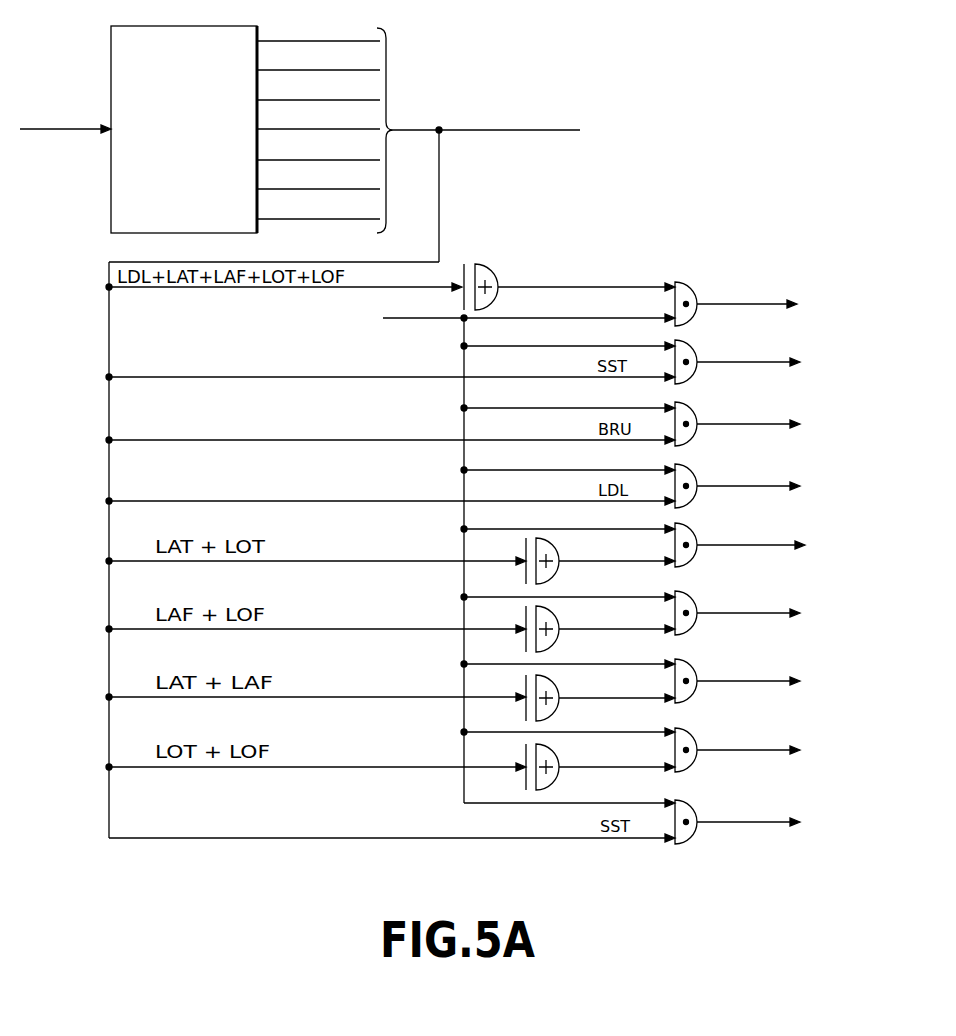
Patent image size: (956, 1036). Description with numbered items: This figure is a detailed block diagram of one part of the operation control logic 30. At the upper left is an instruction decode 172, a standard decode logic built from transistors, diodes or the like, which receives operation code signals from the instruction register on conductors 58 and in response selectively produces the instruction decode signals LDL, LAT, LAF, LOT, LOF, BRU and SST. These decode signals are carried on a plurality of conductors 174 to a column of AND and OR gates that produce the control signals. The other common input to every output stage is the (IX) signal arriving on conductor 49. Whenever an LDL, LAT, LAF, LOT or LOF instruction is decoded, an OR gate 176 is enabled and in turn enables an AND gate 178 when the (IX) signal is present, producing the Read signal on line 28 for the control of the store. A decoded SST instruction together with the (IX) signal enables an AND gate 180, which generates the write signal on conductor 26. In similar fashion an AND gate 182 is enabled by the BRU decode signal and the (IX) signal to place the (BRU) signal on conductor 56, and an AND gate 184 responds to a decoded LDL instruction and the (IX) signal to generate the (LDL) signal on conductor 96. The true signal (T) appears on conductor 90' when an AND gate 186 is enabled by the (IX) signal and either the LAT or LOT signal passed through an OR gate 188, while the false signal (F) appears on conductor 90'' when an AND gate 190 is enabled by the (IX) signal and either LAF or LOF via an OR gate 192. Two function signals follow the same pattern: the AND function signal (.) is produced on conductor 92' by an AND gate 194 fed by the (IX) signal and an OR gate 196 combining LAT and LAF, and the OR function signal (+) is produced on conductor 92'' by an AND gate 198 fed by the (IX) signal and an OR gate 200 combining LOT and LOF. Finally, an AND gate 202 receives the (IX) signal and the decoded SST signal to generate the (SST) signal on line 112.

The instruction decode 172 is at (111, 33).
The conductors 58 is at (78, 126).
The conductors 174 is at (439, 193).
The operation control logic 30 is at (70, 523).
The conductor 49 is at (413, 320).
The OR gate 176 is at (490, 280).
The AND gate 178 is at (688, 282).
The line 28 is at (781, 302).
The AND gate 180 is at (688, 341).
The conductor 26 is at (778, 360).
The AND gate 182 is at (688, 403).
The conductor 56 is at (776, 421).
The AND gate 184 is at (688, 465).
The conductor 96 is at (765, 484).
The AND gate 186 is at (688, 524).
The conductor 90' is at (751, 531).
The OR gate 188 is at (560, 549).
The AND gate 190 is at (688, 592).
The conductor 90'' is at (748, 595).
The OR gate 192 is at (560, 617).
The AND gate 194 is at (688, 660).
The conductor 92' is at (748, 663).
The OR gate 196 is at (560, 686).
The AND gate 198 is at (688, 729).
The conductor 92'' is at (748, 732).
The OR gate 200 is at (560, 758).
The AND gate 202 is at (688, 801).
The line 112 is at (762, 820).